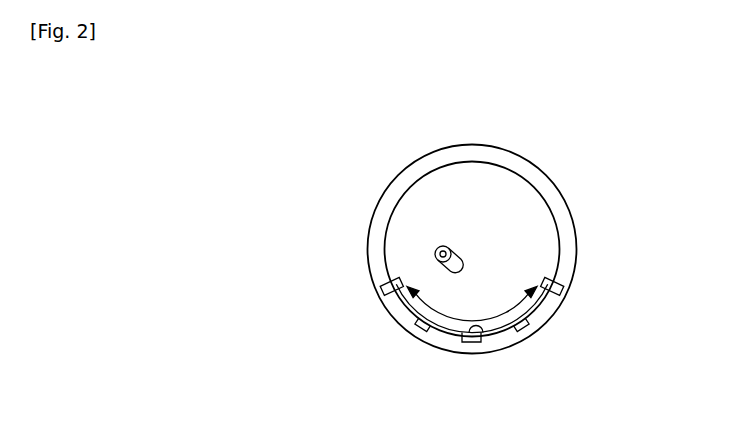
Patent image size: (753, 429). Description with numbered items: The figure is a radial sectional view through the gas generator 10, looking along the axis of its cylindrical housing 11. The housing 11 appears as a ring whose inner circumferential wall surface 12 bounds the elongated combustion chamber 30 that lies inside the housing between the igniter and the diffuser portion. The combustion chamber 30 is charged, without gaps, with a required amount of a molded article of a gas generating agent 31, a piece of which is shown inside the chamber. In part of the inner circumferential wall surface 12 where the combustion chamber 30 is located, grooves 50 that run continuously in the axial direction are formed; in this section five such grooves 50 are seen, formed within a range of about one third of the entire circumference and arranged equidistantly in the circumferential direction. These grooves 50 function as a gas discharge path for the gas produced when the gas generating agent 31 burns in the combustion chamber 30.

The gas generator 10 is at (513, 144).
The cylindrical housing 11 is at (448, 146).
The inner circumferential wall surface 12 is at (398, 203).
The combustion chamber 30 is at (476, 213).
The gas generating agent 31 is at (459, 254).
The grooves 50 is at (482, 327).